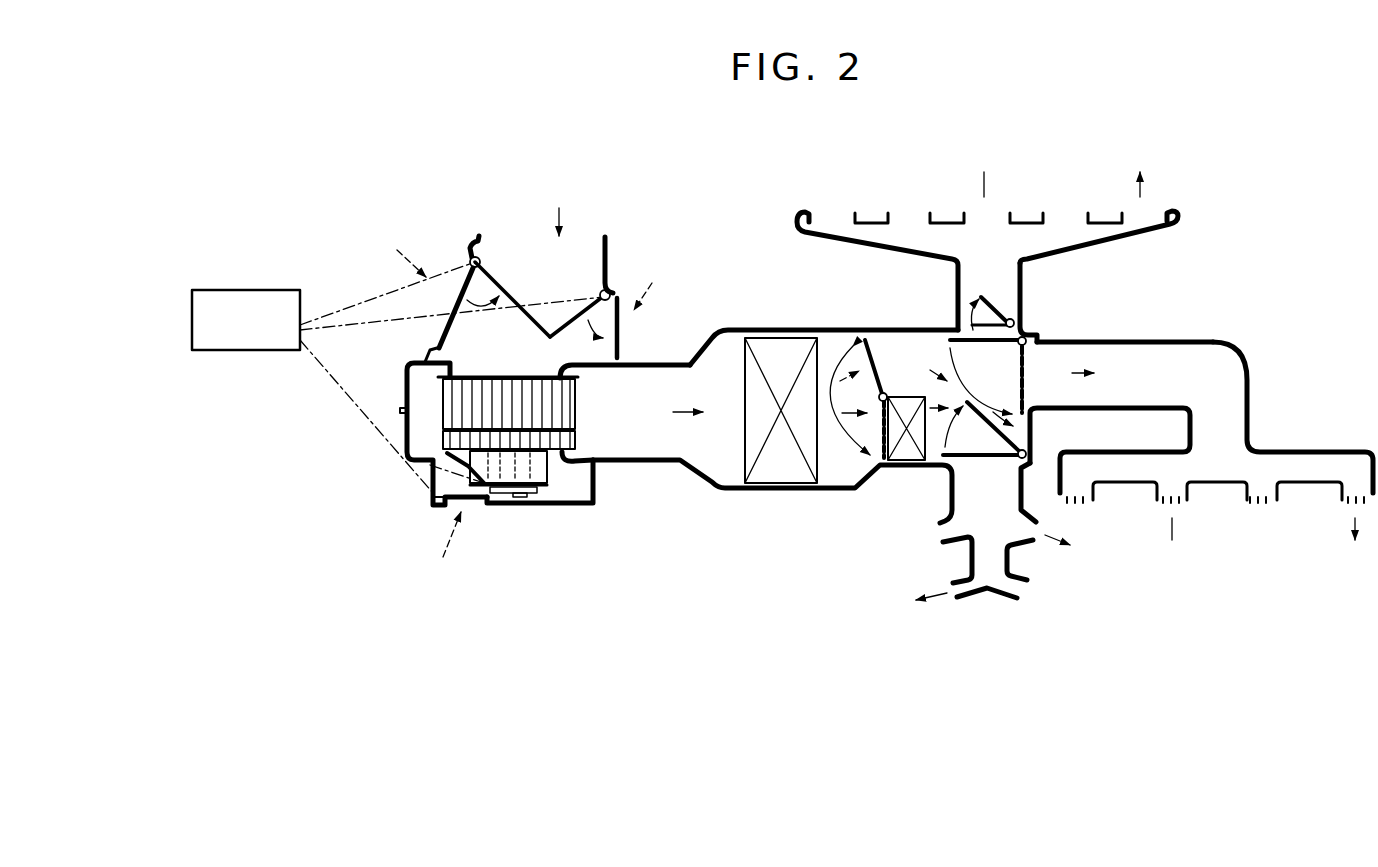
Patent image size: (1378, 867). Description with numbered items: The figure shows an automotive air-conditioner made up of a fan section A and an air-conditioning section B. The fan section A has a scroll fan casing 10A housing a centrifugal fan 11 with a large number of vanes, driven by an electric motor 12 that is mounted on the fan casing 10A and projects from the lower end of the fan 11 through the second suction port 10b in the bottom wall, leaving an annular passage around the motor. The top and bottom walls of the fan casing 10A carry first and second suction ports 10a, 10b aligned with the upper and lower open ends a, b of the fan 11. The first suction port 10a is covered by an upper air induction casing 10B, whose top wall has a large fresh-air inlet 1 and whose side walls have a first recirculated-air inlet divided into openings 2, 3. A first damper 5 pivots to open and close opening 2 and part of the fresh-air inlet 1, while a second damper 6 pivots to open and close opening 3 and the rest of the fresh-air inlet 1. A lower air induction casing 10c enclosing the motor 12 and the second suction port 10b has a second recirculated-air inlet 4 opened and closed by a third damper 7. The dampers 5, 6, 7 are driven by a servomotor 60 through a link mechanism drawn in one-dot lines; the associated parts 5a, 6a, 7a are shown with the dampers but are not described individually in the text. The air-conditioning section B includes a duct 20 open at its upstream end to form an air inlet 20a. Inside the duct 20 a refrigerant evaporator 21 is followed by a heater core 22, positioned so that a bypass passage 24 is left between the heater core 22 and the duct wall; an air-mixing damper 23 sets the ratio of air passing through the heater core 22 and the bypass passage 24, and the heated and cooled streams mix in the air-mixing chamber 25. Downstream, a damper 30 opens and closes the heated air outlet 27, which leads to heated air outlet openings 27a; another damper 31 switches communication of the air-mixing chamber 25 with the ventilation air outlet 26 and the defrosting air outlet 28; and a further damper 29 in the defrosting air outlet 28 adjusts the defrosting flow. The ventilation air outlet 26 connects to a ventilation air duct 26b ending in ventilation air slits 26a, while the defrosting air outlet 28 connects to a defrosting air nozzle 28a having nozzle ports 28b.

The servomotor 60 is at (252, 291).
The fresh-air inlet 1 is at (541, 279).
The recirculated-air inlet opening 2 is at (446, 293).
The recirculated-air inlet opening 3 is at (622, 311).
The second recirculated-air inlet 4 is at (468, 515).
The first damper 5 is at (438, 332).
The link arm 5a is at (508, 295).
The second damper 6 is at (603, 342).
The damper pivot 6a is at (599, 292).
The third damper 7 is at (477, 502).
The damper pivot 7a is at (440, 506).
The scroll fan casing 10A is at (385, 410).
The upper air induction casing 10B is at (607, 247).
The first suction port 10a is at (561, 368).
The second suction port 10b is at (570, 462).
The lower air induction casing 10c is at (594, 490).
The centrifugal fan 11 is at (573, 392).
The electric motor 12 is at (538, 462).
The upper open end a is at (476, 376).
The lower open end b is at (430, 468).
The fan section A is at (581, 248).
The air-conditioning section B is at (1187, 305).
The duct 20 is at (794, 336).
The air inlet 20a is at (678, 395).
The refrigerant evaporator 21 is at (745, 456).
The heater core 22 is at (904, 467).
The air-mixing damper 23 is at (885, 392).
The bypass passage 24 is at (897, 342).
The air-mixing chamber 25 is at (1020, 426).
The ventilation air outlet 26 is at (1037, 373).
The ventilation air slits 26a is at (1183, 500).
The ventilation air duct 26b is at (1250, 392).
The heated air outlet 27 is at (960, 481).
The heated air outlet openings 27a is at (947, 538).
The defrosting air outlet 28 is at (1018, 326).
The defrosting air nozzle 28a is at (1119, 250).
The nozzle ports 28b is at (1057, 218).
The damper 29 is at (957, 318).
The damper 30 is at (986, 459).
The damper 31 is at (988, 343).